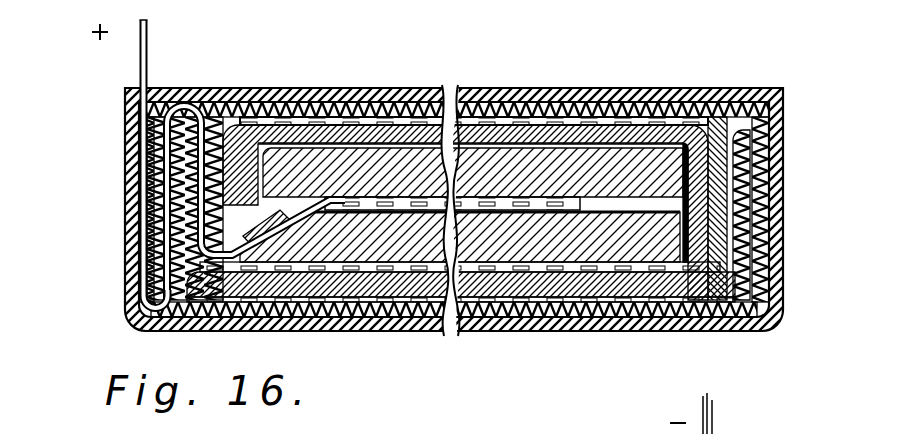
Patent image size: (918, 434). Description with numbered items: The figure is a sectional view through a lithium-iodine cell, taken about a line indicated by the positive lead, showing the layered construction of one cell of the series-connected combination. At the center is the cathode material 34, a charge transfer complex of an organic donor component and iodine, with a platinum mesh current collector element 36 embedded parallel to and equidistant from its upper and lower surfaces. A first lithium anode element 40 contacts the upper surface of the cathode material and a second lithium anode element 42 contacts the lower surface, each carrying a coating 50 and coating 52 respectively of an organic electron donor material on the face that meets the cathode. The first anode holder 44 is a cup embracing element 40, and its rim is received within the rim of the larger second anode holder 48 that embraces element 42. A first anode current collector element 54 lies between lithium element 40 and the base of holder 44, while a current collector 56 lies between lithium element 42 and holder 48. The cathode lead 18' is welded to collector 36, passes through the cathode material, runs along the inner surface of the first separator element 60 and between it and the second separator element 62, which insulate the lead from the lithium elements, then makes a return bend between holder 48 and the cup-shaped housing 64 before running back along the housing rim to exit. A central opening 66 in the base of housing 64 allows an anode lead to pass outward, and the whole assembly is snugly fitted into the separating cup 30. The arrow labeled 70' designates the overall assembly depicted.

The cathode lead 18' is at (267, 194).
The separating cup 30 is at (125, 100).
The cathode material 34 is at (592, 270).
The current collector element 36 is at (387, 205).
The first lithium anode element 40 is at (652, 133).
The second lithium anode element 42 is at (680, 258).
The first anode holder 44 is at (613, 123).
The second anode holder 48 is at (212, 330).
The coating 50 is at (602, 130).
The coating 52 is at (572, 250).
The first anode current collector element 54 is at (531, 90).
The current collector 56 is at (434, 327).
The first separator element 60 is at (187, 233).
The second separator element 62 is at (210, 193).
The housing 64 is at (267, 93).
The central opening 66 is at (355, 93).
The battery 70' is at (826, 38).